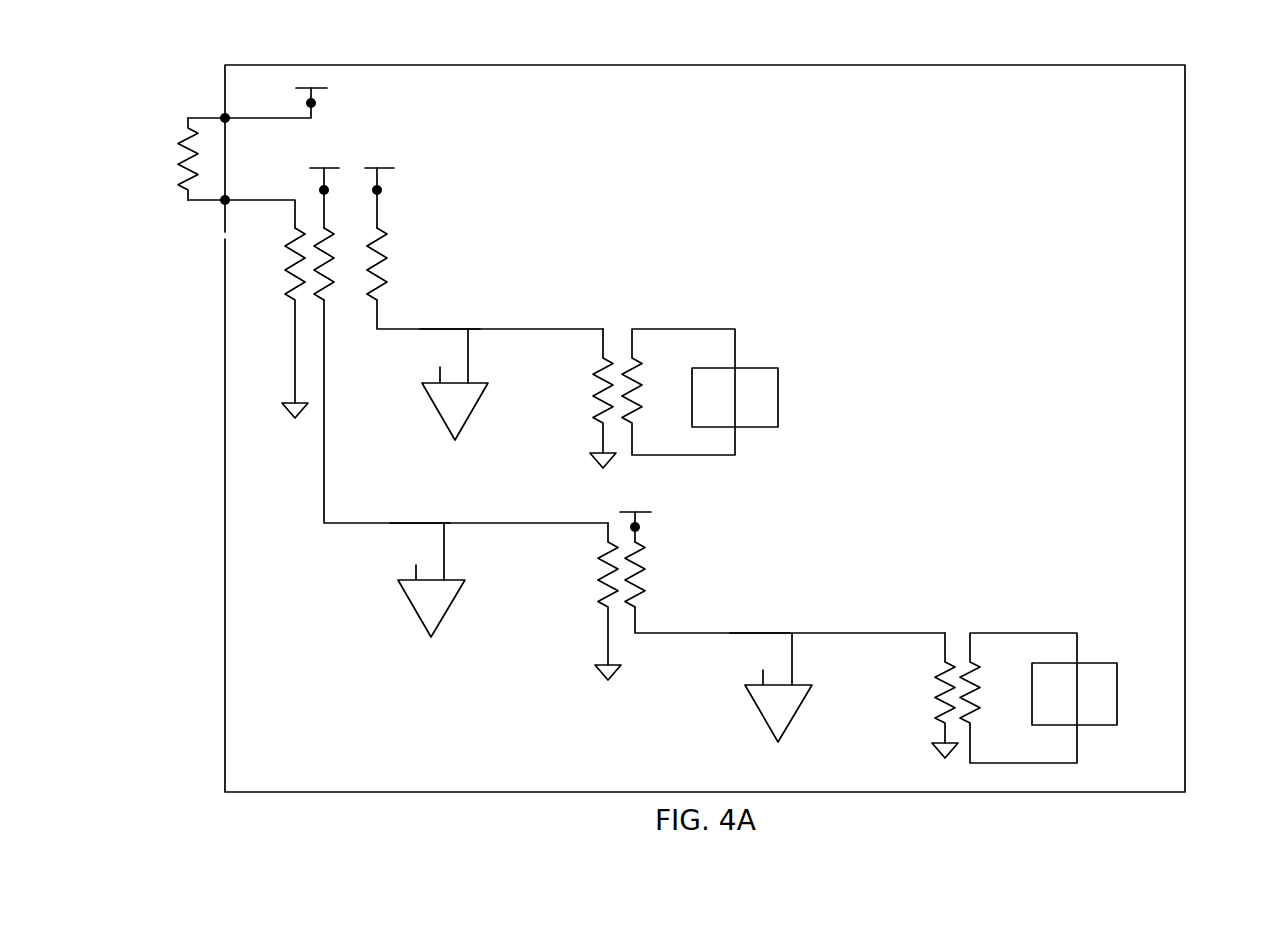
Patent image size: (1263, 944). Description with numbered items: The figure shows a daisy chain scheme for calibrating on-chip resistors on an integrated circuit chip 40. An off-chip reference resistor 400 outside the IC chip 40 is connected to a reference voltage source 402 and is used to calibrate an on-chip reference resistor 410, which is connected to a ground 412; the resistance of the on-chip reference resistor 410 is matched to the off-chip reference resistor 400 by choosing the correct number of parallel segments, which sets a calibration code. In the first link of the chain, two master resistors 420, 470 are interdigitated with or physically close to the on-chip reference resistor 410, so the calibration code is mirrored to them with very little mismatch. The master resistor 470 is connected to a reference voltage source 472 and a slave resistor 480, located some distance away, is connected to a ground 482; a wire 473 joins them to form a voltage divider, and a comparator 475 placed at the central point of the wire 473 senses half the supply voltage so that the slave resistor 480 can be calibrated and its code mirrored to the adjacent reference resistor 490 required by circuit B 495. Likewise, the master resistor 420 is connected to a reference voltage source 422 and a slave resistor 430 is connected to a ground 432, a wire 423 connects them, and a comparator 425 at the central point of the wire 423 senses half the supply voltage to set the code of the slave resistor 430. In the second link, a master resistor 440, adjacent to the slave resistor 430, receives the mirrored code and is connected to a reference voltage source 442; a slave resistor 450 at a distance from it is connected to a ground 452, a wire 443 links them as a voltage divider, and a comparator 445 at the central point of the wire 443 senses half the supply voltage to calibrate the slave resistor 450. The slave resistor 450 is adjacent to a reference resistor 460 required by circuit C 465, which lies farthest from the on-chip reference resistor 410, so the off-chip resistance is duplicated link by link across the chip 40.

The IC chip 40 is at (1185, 187).
The off-chip reference resistor 400 is at (186, 118).
The reference voltage source 402 is at (333, 78).
The on-chip reference resistor 410 is at (294, 301).
The ground 412 is at (283, 407).
The master resistor 420 is at (324, 301).
The reference voltage source 422 is at (310, 157).
The wire 423 is at (414, 523).
The comparator 425 is at (410, 612).
The slave resistor 430 is at (600, 598).
The ground 432 is at (595, 670).
The master resistor 440 is at (631, 604).
The reference voltage source 442 is at (655, 501).
The wire 443 is at (758, 633).
The comparator 445 is at (757, 716).
The slave resistor 450 is at (945, 667).
The ground 452 is at (930, 748).
The reference resistor 460 is at (972, 663).
The circuit C 465 is at (1120, 695).
The master resistor 470 is at (384, 232).
The reference voltage source 472 is at (400, 157).
The wire 473 is at (448, 329).
The comparator 475 is at (435, 416).
The slave resistor 480 is at (598, 361).
The ground 482 is at (590, 456).
The reference resistor 490 is at (634, 359).
The circuit B 495 is at (780, 398).